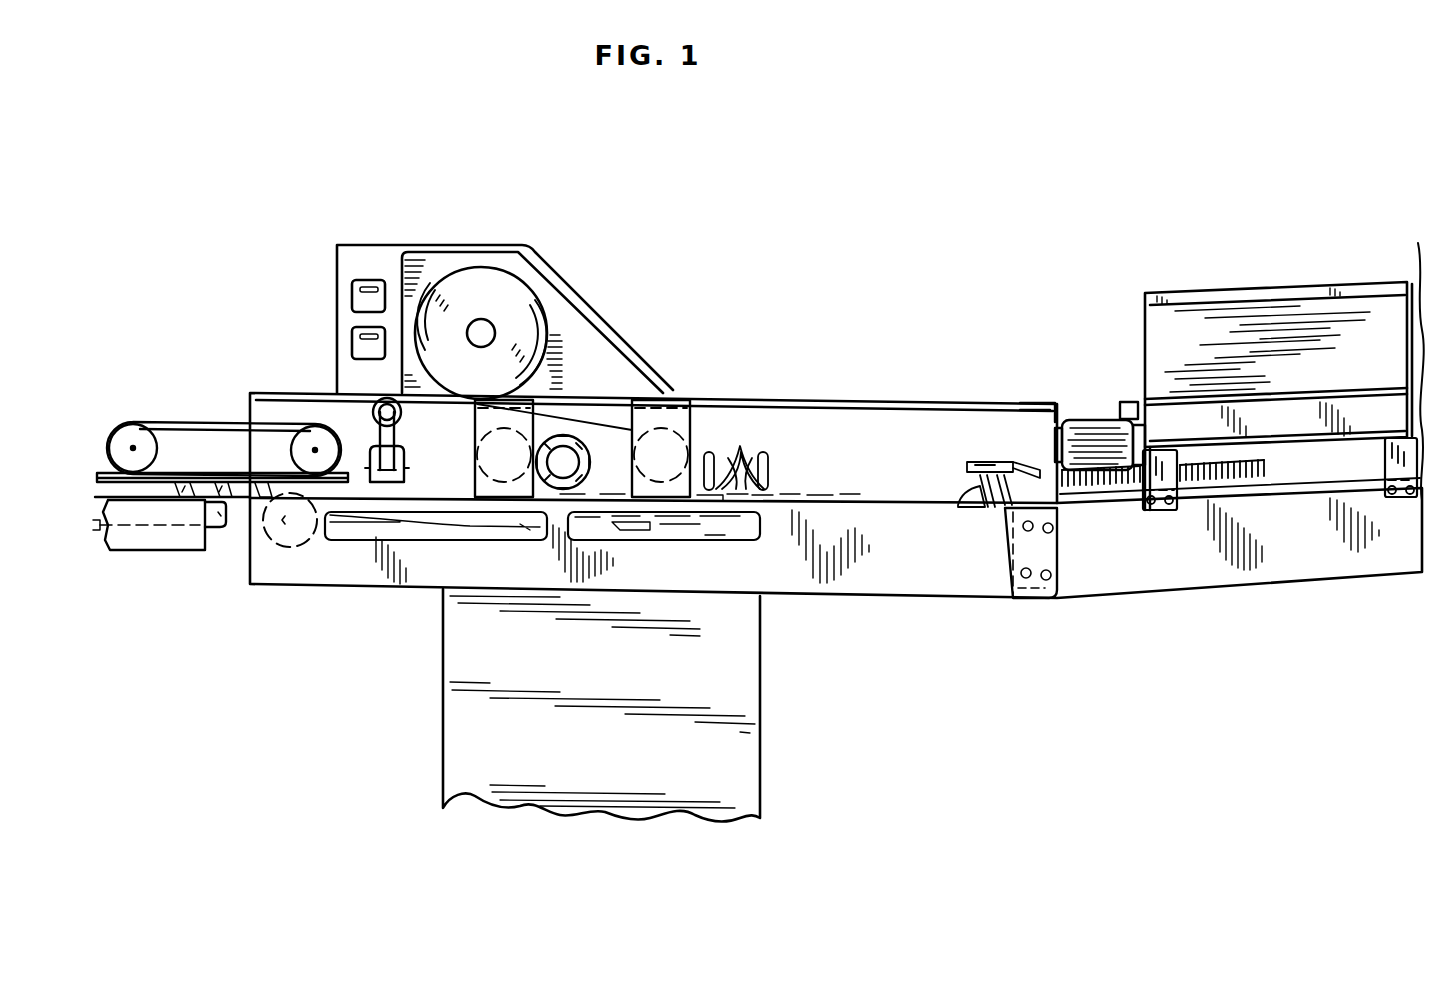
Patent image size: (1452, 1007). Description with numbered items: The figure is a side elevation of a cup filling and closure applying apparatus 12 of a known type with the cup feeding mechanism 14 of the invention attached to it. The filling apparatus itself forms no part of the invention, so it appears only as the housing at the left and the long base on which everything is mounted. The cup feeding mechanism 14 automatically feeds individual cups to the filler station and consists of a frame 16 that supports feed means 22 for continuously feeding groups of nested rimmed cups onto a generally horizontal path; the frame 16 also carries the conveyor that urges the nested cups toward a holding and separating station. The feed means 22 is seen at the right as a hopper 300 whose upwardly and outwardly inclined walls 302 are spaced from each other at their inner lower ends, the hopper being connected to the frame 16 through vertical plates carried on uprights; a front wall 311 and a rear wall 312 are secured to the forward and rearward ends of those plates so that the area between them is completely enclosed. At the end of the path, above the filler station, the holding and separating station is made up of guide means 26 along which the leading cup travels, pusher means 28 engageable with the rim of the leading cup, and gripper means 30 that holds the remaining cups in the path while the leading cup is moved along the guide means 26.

The cup filling and closure applying apparatus 12 is at (648, 290).
The cup feeding mechanism 14 is at (1131, 553).
The frame 16 is at (1268, 557).
The feed means 22 is at (1216, 367).
The guide means 26 is at (960, 482).
The pusher means 28 is at (972, 474).
The gripper means 30 is at (1001, 512).
The hopper 300 is at (1222, 377).
The inclined walls 302 is at (1157, 353).
The front wall 311 is at (1138, 400).
The rear wall 312 is at (1423, 262).